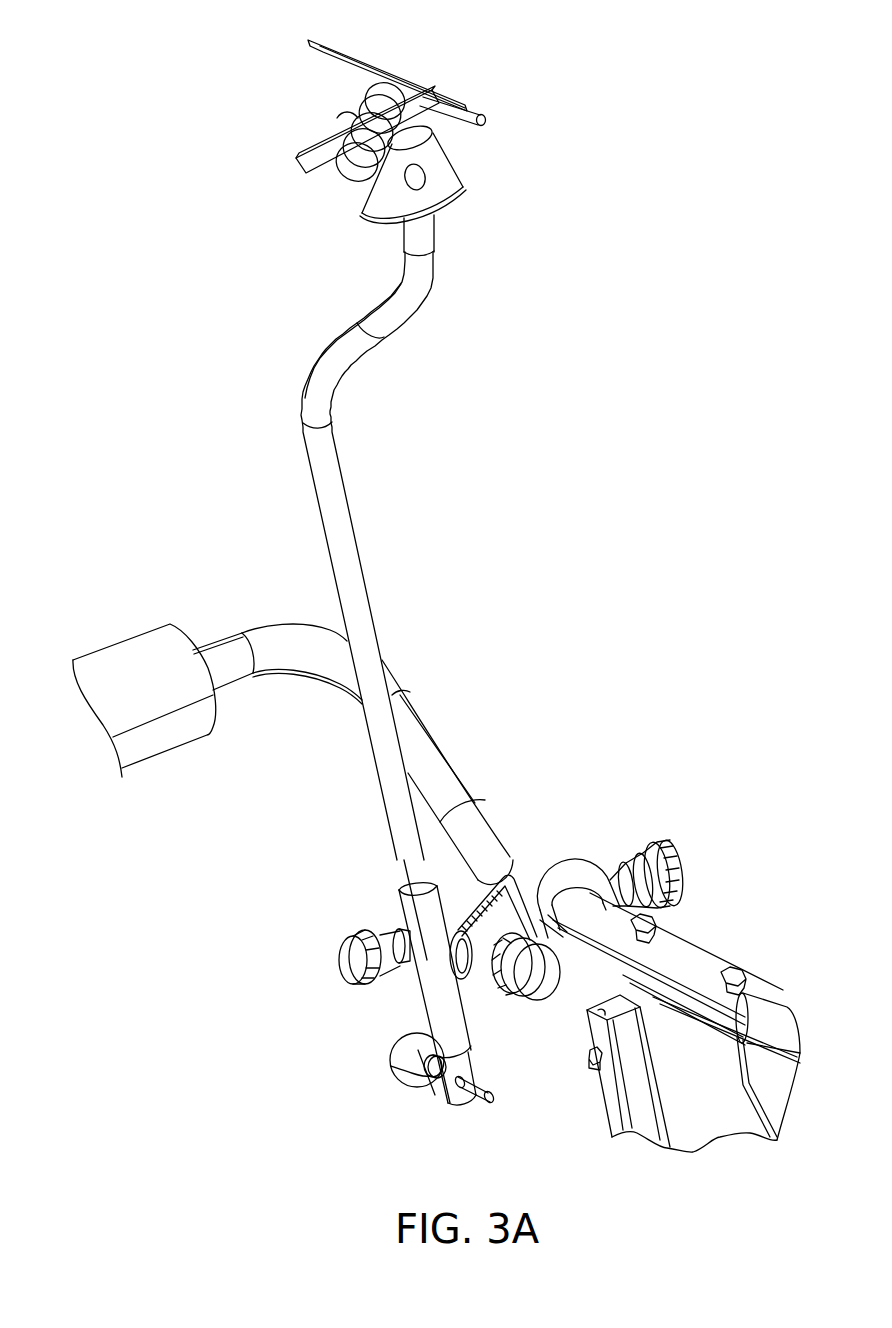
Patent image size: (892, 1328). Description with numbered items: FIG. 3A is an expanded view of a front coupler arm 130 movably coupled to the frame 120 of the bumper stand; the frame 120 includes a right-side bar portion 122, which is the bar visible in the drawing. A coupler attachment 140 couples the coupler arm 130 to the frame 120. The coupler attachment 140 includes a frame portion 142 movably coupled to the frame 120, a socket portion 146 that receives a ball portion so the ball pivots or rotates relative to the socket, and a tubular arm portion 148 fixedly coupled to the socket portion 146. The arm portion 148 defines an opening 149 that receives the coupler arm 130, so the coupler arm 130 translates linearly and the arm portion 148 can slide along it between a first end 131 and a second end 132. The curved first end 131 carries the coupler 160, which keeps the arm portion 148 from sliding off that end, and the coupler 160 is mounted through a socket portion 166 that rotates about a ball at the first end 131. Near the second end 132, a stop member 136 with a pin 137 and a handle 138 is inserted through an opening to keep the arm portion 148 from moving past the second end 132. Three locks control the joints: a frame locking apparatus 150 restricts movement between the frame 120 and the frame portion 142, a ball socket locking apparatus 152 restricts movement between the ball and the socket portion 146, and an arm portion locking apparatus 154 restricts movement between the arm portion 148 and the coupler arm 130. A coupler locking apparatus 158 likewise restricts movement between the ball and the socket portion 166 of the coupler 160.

The frame 120 is at (445, 733).
The right-side bar portion 122 is at (700, 957).
The front coupler arm 130 is at (360, 540).
The first end 131 is at (434, 220).
The second end 132 is at (463, 1107).
The stop member 136 is at (402, 1097).
The pin 137 is at (467, 1078).
The handle 138 is at (393, 1057).
The coupler attachment 140 is at (558, 1058).
The frame portion 142 is at (573, 860).
The socket portion 146 is at (490, 875).
The arm portion 148 is at (423, 992).
The opening 149 is at (400, 883).
The frame locking apparatus 150 is at (683, 850).
The ball socket locking apparatus 152 is at (530, 980).
The arm portion locking apparatus 154 is at (340, 957).
The coupler locking apparatus 158 is at (345, 120).
The coupler 160 is at (390, 70).
The socket portion 166 is at (457, 182).